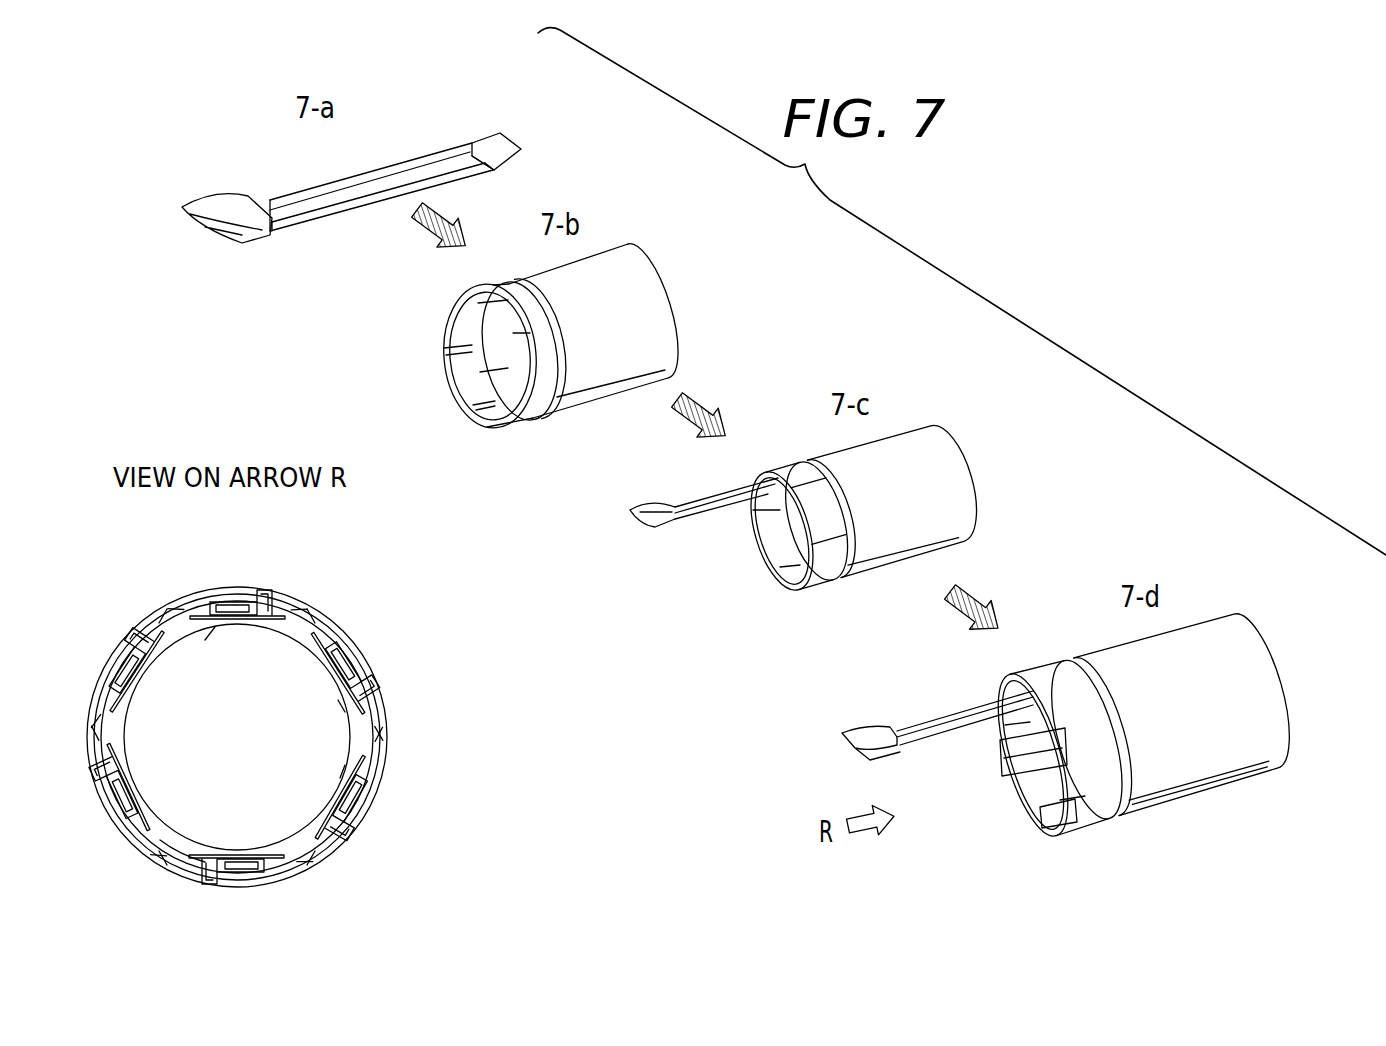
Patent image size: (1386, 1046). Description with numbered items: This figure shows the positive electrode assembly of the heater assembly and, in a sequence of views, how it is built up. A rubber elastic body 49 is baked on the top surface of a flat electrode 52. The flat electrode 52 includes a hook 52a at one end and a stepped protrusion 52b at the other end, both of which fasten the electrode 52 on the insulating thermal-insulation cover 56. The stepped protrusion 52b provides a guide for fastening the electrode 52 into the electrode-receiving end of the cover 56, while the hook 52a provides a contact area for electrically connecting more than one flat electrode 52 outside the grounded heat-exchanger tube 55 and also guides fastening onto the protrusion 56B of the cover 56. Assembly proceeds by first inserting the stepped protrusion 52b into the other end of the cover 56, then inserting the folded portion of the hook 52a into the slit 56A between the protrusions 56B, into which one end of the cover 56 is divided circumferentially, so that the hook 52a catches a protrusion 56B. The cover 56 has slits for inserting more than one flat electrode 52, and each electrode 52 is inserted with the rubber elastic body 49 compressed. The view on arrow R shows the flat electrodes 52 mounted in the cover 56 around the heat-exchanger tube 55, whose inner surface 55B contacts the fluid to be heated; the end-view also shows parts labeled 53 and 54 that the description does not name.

The rubber elastic body 49 is at (406, 165).
The flat electrode 52 is at (377, 215).
The hook 52a is at (228, 202).
The stepped protrusion 52b is at (498, 138).
The engaging tab 53 is at (215, 627).
The ring 54 is at (310, 625).
The heat-exchanger tube 55 is at (292, 633).
The inner surface 55B is at (178, 835).
The insulating thermal-insulation cover 56 is at (652, 290).
The slit 56A is at (475, 383).
The protrusion 56B is at (527, 312).